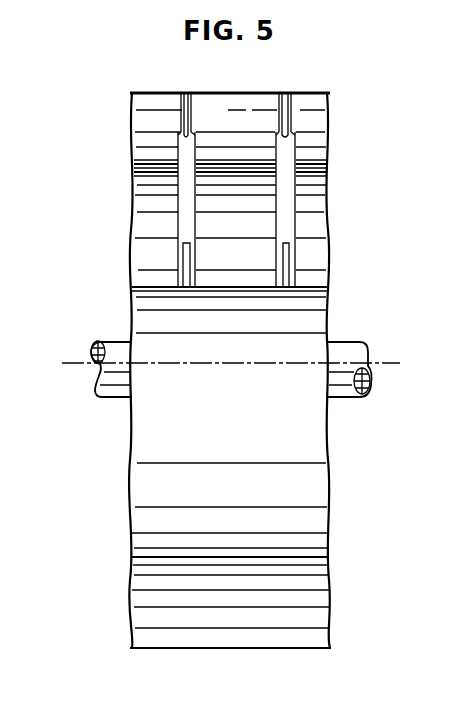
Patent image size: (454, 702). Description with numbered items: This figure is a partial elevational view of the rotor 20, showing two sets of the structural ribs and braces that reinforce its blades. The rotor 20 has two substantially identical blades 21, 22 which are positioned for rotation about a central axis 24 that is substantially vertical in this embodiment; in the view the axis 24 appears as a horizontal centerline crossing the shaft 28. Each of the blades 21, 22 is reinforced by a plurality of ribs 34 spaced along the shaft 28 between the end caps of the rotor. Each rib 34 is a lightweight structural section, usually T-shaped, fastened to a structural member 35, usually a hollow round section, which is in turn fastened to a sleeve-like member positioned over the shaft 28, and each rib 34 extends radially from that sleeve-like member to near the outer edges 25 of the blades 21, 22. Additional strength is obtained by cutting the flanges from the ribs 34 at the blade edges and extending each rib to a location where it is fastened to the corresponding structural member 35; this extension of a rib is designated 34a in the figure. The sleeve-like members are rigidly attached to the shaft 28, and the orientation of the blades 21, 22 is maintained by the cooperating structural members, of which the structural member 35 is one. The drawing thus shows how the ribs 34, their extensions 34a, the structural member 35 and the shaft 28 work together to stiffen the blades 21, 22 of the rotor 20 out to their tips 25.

The rotor 20 is at (112, 533).
The blade 21 is at (318, 536).
The blade 22 is at (320, 163).
The central axis 24 is at (383, 362).
The outer blade tips 25 is at (302, 93).
The shaft 28 is at (340, 399).
The ribs 34 is at (190, 102).
The rib extension 34a is at (192, 263).
The structural member 35 is at (182, 201).